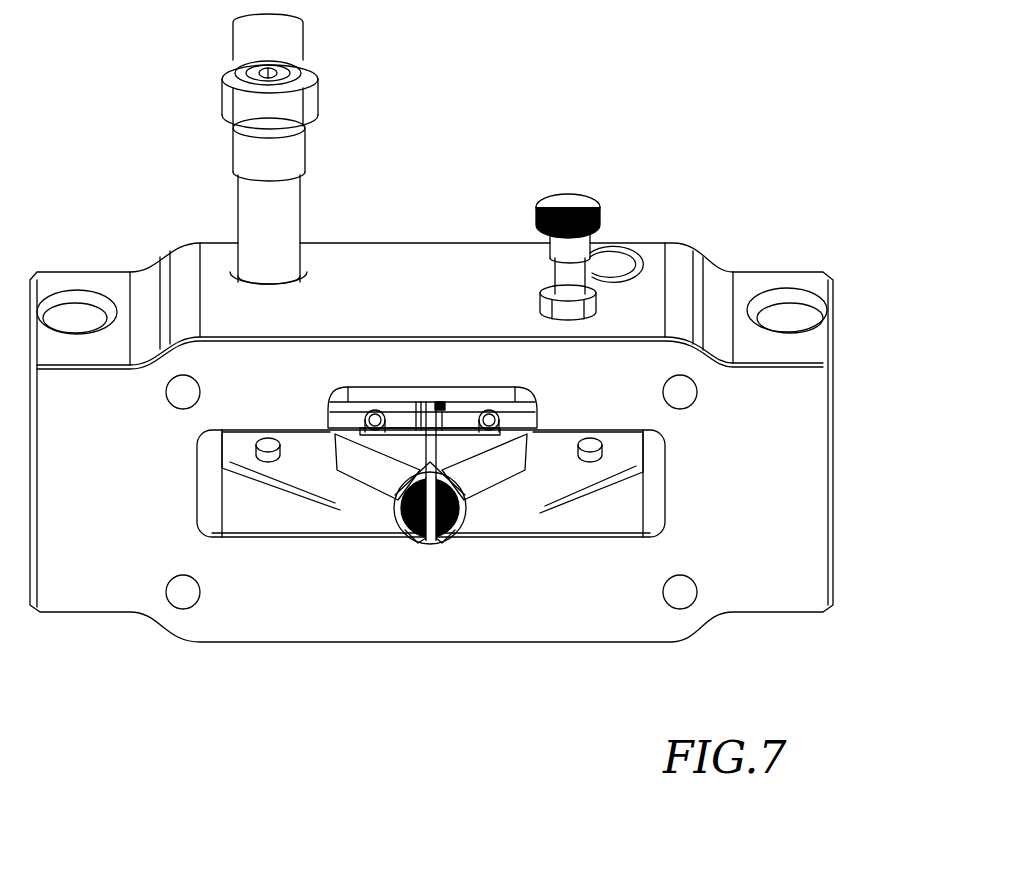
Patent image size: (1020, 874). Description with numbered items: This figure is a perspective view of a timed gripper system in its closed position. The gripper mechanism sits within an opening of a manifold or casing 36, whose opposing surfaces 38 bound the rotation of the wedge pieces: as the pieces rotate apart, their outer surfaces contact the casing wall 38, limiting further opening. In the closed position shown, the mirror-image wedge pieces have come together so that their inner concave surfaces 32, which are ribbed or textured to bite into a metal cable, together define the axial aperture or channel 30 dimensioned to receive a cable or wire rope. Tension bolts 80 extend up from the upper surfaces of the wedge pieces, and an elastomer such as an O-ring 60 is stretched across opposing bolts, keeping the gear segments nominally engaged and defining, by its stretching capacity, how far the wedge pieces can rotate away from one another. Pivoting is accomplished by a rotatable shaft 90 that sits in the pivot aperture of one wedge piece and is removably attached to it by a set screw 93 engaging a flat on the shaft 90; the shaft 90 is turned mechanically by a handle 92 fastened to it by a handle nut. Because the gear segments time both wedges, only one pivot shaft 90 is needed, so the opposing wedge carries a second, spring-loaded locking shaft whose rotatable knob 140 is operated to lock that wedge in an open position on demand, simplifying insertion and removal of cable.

The axial aperture or channel 30 is at (432, 548).
The inner concave surface 32 is at (452, 522).
The manifold or casing 36 is at (797, 438).
The opposing surfaces (casing wall) 38 is at (641, 512).
The O-ring (elastomer) 60 is at (403, 428).
The tension bolt 80 is at (363, 427).
The rotatable shaft (pivot shaft) 90 is at (272, 200).
The handle 92 is at (268, 37).
The set screw 93 is at (268, 448).
The rotatable knob 140 is at (568, 202).